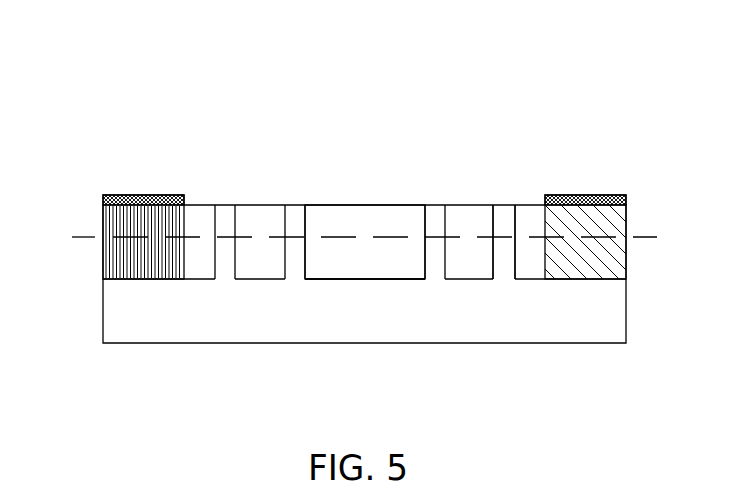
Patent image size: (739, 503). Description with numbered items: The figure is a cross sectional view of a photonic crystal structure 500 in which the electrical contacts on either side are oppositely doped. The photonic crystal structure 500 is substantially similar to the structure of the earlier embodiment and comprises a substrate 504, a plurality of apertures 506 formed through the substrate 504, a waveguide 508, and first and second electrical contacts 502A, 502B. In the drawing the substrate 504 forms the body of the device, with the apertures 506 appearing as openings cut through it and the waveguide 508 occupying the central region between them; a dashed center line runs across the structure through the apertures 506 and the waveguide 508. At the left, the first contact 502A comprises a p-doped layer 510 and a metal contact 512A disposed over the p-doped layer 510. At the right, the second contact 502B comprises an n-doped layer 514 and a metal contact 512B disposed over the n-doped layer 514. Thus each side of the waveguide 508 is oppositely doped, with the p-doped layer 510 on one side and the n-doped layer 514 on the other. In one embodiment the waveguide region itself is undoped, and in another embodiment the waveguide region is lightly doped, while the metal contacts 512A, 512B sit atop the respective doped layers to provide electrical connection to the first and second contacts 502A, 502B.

The photonic crystal structure 500 is at (247, 62).
The first electrical contact 502A is at (117, 253).
The second electrical contact 502B is at (626, 255).
The substrate 504 is at (348, 228).
The apertures 506 is at (505, 220).
The waveguide 508 is at (392, 272).
The p-doped layer 510 is at (146, 263).
The metal contact 512A is at (143, 195).
The metal contact 512B is at (578, 195).
The n-doped layer 514 is at (570, 258).